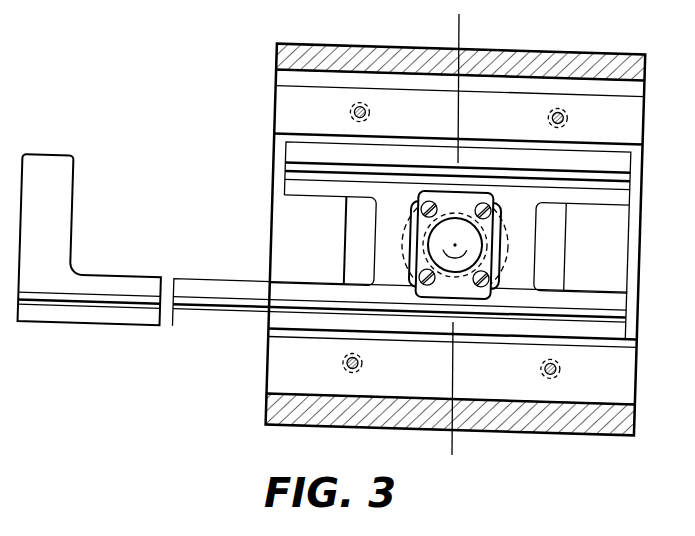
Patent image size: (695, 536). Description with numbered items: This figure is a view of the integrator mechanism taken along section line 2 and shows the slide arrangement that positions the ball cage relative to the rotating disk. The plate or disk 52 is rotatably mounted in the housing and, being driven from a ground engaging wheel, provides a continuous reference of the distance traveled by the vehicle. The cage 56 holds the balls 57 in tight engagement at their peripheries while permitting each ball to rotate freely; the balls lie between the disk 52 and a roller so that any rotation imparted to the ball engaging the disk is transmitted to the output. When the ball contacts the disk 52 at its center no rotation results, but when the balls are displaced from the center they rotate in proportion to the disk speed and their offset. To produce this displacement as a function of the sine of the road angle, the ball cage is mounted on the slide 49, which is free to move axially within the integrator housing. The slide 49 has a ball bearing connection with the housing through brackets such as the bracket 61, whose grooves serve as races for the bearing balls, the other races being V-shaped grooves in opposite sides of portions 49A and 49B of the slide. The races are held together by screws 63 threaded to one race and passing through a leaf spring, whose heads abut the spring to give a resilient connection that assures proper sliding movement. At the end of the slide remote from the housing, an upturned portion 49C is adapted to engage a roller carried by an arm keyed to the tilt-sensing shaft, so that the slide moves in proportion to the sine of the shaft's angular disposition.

The section line 2- 2 is at (459, 14).
The slide 49 is at (118, 287).
The portion of the slide 49A is at (290, 150).
The portion of the slide 49B is at (283, 287).
The upturned portion of the slide 49C is at (60, 212).
The plate or disk 52 is at (401, 241).
The cage 56 is at (489, 193).
The balls 57 is at (470, 238).
The bracket 61 is at (641, 163).
The screws 63 is at (371, 112).